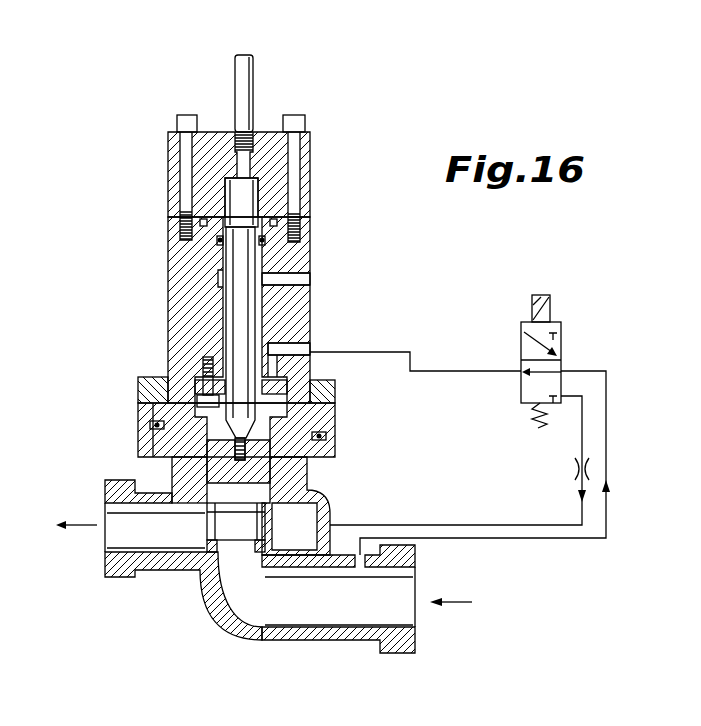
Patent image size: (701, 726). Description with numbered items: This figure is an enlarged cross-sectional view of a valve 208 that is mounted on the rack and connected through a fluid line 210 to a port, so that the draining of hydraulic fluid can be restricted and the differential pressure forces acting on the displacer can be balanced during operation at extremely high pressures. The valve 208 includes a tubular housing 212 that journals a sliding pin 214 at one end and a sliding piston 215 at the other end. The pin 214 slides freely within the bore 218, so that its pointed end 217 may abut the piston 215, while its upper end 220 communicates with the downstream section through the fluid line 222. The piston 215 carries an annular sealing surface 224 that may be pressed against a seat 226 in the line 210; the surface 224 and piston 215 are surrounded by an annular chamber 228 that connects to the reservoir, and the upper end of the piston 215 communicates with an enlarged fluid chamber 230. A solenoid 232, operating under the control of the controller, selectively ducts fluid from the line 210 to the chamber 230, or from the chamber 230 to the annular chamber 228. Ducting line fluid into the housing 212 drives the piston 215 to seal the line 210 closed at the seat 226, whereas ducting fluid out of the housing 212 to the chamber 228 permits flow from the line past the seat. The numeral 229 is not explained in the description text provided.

The valve 208 is at (126, 319).
The fluid line 210 is at (328, 640).
The tubular housing 212 is at (168, 290).
The sliding pin 214 is at (255, 263).
The sliding piston 215 is at (325, 502).
The pointed end 217 is at (320, 436).
The bore 218 is at (252, 317).
The upper end 220 is at (238, 223).
The fluid line 222 is at (253, 74).
The annular sealing surface 224 is at (240, 545).
The seat 226 is at (205, 570).
The annular chamber 228 is at (300, 528).
The sealing ring 229 is at (155, 425).
The enlarged fluid chamber 230 is at (307, 352).
The solenoid 232 is at (580, 320).